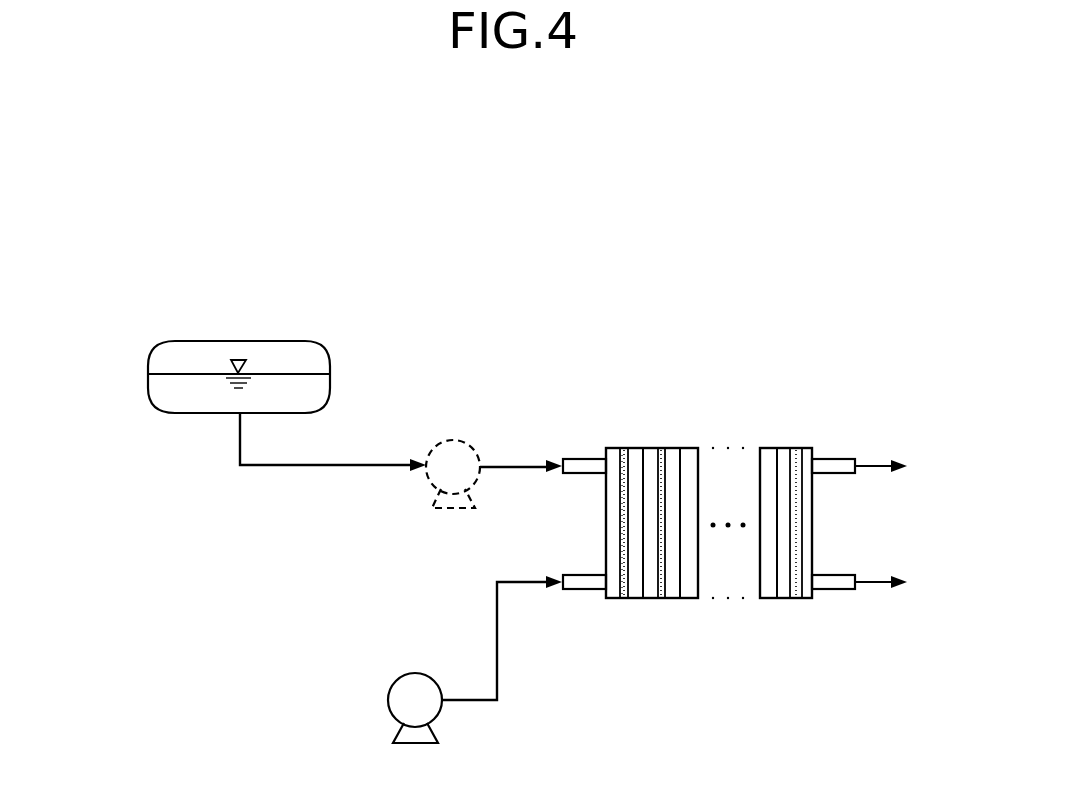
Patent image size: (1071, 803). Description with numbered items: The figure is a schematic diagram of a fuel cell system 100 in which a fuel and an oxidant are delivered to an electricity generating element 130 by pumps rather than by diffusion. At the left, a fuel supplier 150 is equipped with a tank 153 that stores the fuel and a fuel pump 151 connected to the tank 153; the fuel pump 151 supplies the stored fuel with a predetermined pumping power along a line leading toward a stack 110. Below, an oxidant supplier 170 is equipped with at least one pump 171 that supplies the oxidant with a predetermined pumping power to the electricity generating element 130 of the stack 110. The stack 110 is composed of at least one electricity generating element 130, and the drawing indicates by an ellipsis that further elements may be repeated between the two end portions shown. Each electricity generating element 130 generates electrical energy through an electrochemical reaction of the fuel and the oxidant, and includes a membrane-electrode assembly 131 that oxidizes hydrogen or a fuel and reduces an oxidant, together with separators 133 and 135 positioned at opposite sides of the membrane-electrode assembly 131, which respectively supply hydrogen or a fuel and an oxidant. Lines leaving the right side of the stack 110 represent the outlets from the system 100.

The fuel cell system 100 is at (557, 236).
The stack 110 is at (735, 546).
The electricity generating element 130 is at (607, 686).
The membrane-electrode assembly 131 is at (668, 600).
The separator 133 is at (650, 600).
The separator 135 is at (676, 600).
The fuel supplier 150 is at (301, 397).
The fuel pump 151 is at (443, 441).
The tank 153 is at (242, 341).
The oxidant supplier 170 is at (417, 659).
The pump 171 is at (411, 675).